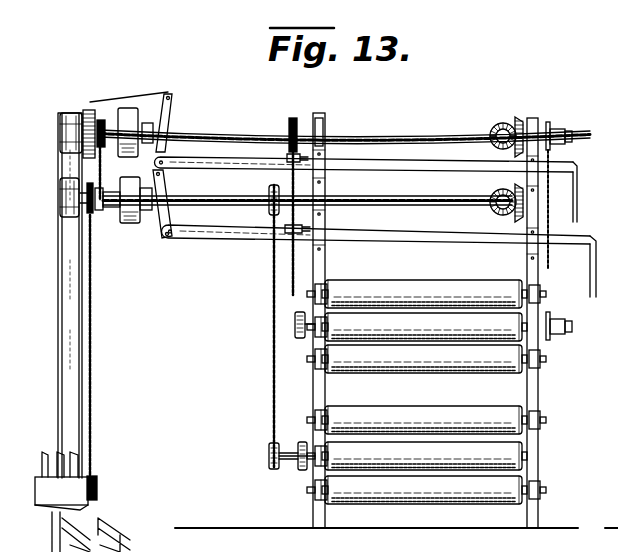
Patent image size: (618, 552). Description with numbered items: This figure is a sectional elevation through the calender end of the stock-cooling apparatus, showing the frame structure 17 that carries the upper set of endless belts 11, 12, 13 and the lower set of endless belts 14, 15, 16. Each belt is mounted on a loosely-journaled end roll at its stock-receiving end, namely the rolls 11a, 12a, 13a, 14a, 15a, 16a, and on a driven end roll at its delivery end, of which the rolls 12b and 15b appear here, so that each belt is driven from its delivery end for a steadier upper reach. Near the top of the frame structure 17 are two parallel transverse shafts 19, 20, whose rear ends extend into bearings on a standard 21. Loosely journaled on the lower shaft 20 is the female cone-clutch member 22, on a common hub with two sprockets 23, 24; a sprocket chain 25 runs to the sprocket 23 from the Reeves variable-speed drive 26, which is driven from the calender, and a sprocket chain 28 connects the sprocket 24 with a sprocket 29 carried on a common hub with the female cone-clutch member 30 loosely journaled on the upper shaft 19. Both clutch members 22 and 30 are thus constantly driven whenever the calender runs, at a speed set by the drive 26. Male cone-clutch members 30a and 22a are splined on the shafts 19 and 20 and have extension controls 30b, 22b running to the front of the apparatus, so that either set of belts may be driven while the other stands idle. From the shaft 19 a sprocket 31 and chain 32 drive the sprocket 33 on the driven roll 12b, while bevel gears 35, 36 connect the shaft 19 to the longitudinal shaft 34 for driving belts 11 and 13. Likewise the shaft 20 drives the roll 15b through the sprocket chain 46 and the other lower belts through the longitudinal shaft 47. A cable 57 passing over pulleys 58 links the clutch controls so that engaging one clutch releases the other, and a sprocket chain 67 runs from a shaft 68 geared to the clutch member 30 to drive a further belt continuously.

The endless belt 11 is at (434, 294).
The endless belt 12 is at (424, 327).
The endless belt 13 is at (434, 359).
The endless belt 14 is at (434, 420).
The endless belt 15 is at (424, 456).
The endless belt 16 is at (434, 490).
The loosely-journaled end roll 11a is at (328, 288).
The loosely-journaled end roll 12a is at (296, 334).
The driven end roll 12b is at (315, 320).
The loosely-journaled end roll 13a is at (318, 360).
The loosely-journaled end roll 14a is at (318, 414).
The loosely-journaled end roll 15a is at (300, 470).
The driven end roll 15b is at (318, 450).
The loosely-journaled end roll 16a is at (318, 498).
The frame structure 17 is at (325, 118).
The transverse shaft 19 is at (403, 136).
The transverse shaft 20 is at (410, 195).
The standard 21 is at (70, 326).
The female cone-clutch member 22 is at (137, 214).
The male cone-clutch member 22a is at (147, 213).
The extension control 22b is at (582, 238).
The sprocket 23 is at (87, 205).
The sprocket 24 is at (116, 207).
The sprocket chain 25 is at (92, 386).
The Reeves variable-speed drive 26 is at (72, 477).
The sprocket chain 28 is at (96, 162).
The sprocket 29 is at (100, 118).
The female cone-clutch member 30 is at (128, 108).
The male cone-clutch member 30a is at (176, 90).
The extension control 30b is at (572, 167).
The sprocket 31 is at (552, 126).
The sprocket chain 32 is at (552, 210).
The sprocket 33 is at (554, 318).
The shaft 34 is at (490, 129).
The bevel gear 35 is at (492, 142).
The bevel gear 36 is at (521, 120).
The sprocket chain 46 is at (272, 318).
The longitudinal shaft 47 is at (490, 208).
The cable 57 is at (240, 164).
The pulley 58 is at (286, 157).
The sprocket chain 67 is at (290, 270).
The shaft 68 is at (219, 132).